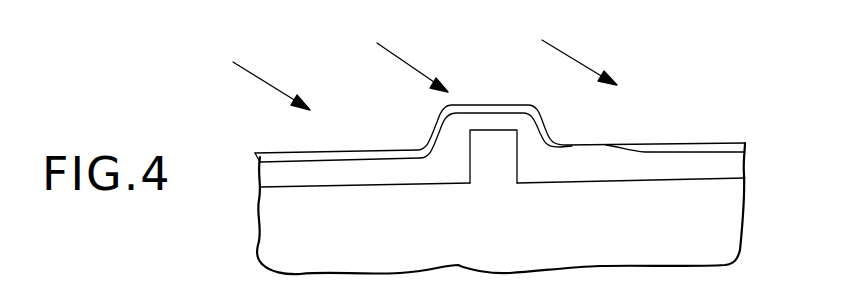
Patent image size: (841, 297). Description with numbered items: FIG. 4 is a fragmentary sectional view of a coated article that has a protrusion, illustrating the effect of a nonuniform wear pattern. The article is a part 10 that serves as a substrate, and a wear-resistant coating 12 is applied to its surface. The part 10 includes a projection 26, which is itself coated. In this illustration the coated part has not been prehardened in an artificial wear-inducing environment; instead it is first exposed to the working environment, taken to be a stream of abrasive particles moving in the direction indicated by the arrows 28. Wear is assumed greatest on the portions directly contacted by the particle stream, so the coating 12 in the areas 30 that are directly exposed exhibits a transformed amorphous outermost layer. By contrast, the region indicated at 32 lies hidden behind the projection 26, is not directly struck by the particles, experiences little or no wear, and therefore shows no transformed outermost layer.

The part 10 is at (260, 235).
The coating 12 is at (260, 175).
The projection 26 is at (518, 162).
The arrows 28 is at (410, 66).
The areas directly exposed to the stream 30 is at (273, 153).
The area not directly exposed to the particles 32 is at (547, 130).